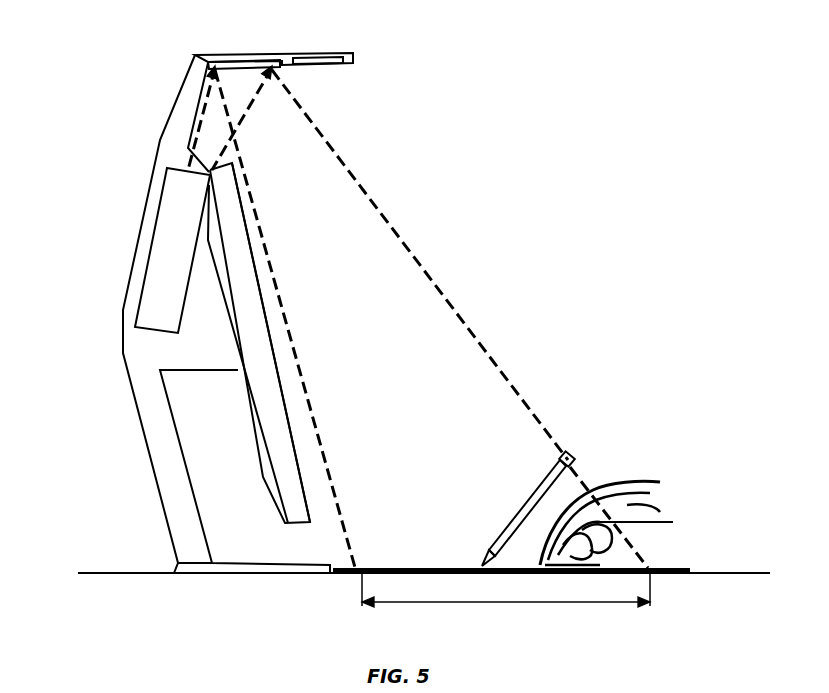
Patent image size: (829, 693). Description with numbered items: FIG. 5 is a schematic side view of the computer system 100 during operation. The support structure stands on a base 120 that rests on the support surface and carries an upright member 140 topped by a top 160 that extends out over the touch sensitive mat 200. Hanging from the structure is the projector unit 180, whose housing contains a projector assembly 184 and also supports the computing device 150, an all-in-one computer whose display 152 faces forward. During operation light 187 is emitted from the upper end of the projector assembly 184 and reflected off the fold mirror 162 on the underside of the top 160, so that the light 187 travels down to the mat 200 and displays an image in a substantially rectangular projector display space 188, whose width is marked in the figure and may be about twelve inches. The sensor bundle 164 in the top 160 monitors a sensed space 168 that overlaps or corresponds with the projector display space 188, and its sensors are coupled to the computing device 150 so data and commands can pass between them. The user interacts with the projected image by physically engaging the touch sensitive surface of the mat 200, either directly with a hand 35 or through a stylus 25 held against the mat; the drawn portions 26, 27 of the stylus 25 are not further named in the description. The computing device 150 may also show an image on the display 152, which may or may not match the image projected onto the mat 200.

The computer system 100 is at (552, 181).
The base 120 is at (202, 580).
The upright member 140 is at (115, 203).
The computing device 150 is at (291, 343).
The display 152 is at (285, 395).
The top 160 is at (274, 34).
The fold mirror 162 is at (258, 60).
The sensor bundle 164 is at (322, 55).
The sensed space 168 is at (418, 317).
The projector unit 180 is at (142, 352).
The projector assembly 184 is at (157, 181).
The light 187 is at (327, 133).
The projector display space 188 is at (465, 555).
The touch sensitive mat 200 is at (688, 578).
The stylus 25 is at (537, 500).
The stylus tip 26 is at (492, 548).
The stylus cap 27 is at (565, 457).
The user's hand 35 is at (633, 483).